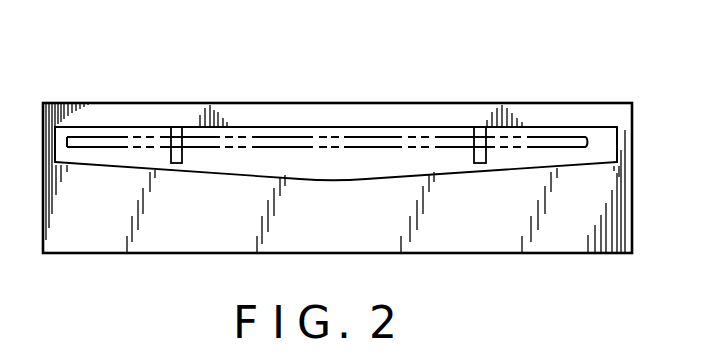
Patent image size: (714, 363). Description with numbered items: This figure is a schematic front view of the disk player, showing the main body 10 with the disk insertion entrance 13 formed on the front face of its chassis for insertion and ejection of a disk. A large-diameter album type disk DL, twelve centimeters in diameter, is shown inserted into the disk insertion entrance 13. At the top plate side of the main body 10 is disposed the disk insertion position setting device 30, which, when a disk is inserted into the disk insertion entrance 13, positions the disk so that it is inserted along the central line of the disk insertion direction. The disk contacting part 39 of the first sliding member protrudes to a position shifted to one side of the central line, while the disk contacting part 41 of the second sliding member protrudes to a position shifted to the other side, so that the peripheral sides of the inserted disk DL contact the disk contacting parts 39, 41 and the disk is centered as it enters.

The main body 10 is at (632, 195).
The disk insertion position setting device 30 is at (167, 117).
The disk insertion entrance 13 is at (336, 178).
The large-diameter album type disk DL is at (531, 138).
The disk contacting part 39 is at (173, 165).
The disk contacting part 41 is at (480, 165).